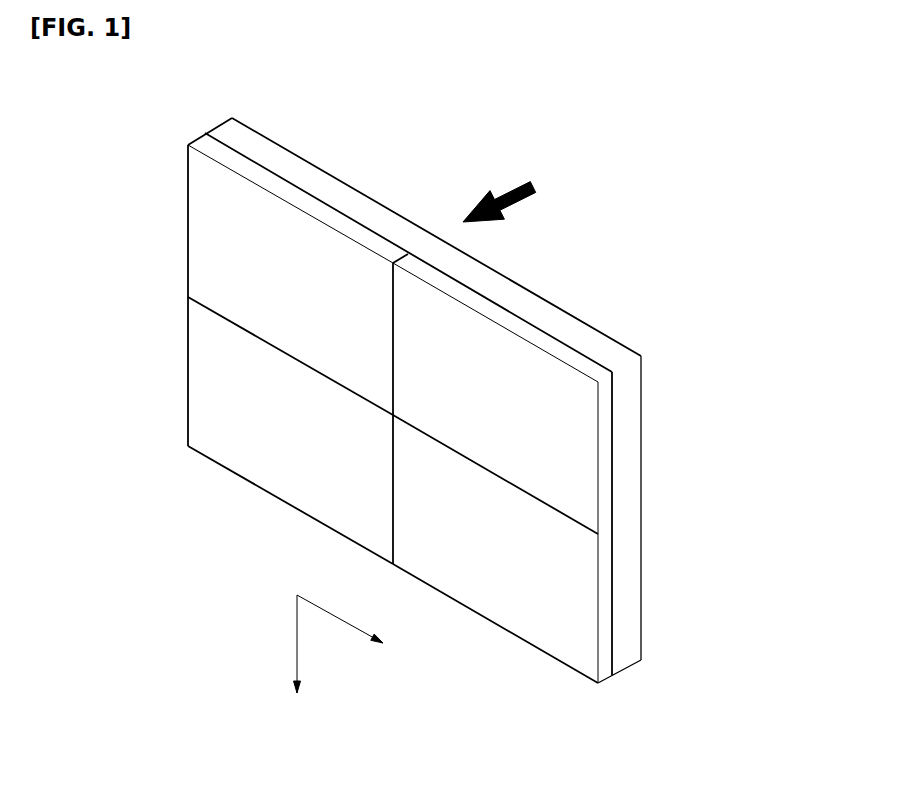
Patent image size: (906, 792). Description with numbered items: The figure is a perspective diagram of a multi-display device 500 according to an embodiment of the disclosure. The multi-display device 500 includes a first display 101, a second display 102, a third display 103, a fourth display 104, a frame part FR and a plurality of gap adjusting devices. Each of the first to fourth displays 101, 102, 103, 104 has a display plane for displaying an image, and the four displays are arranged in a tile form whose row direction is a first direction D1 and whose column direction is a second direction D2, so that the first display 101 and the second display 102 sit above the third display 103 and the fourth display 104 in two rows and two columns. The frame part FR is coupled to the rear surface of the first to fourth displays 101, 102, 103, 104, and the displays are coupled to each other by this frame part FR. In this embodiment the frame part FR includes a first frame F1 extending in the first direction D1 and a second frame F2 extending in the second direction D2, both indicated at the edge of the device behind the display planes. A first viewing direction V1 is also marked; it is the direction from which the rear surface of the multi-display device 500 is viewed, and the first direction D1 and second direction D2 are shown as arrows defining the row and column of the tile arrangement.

The multi-display device 500 is at (448, 400).
The first display 101 is at (223, 245).
The second display 102 is at (577, 427).
The third display 103 is at (223, 401).
The fourth display 104 is at (578, 593).
The first frame F1 is at (564, 318).
The second frame F2 is at (628, 392).
The frame part FR is at (513, 400).
The first viewing direction V1 is at (512, 190).
The first direction D1 is at (354, 630).
The second direction D2 is at (295, 660).